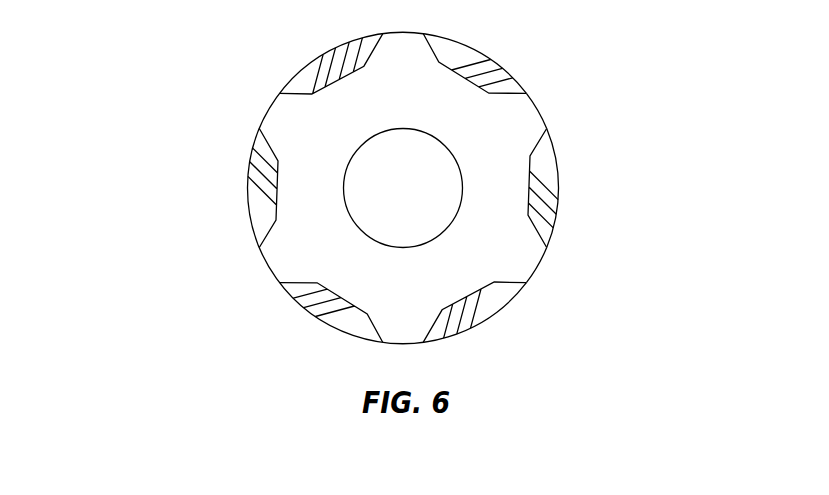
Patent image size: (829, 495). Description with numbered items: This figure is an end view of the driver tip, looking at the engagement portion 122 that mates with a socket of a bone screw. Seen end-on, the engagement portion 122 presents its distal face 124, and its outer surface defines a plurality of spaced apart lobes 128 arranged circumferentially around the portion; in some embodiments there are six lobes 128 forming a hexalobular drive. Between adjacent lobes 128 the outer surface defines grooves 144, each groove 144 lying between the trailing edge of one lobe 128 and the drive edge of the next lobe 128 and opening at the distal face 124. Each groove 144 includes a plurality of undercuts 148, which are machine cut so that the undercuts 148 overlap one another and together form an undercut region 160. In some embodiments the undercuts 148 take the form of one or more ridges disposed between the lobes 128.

The engagement portion 122 is at (193, 138).
The distal face 124 is at (518, 118).
The lobe 128 is at (525, 262).
The groove 144 is at (573, 195).
The undercut 148 is at (451, 69).
The undercut region 160 is at (300, 50).